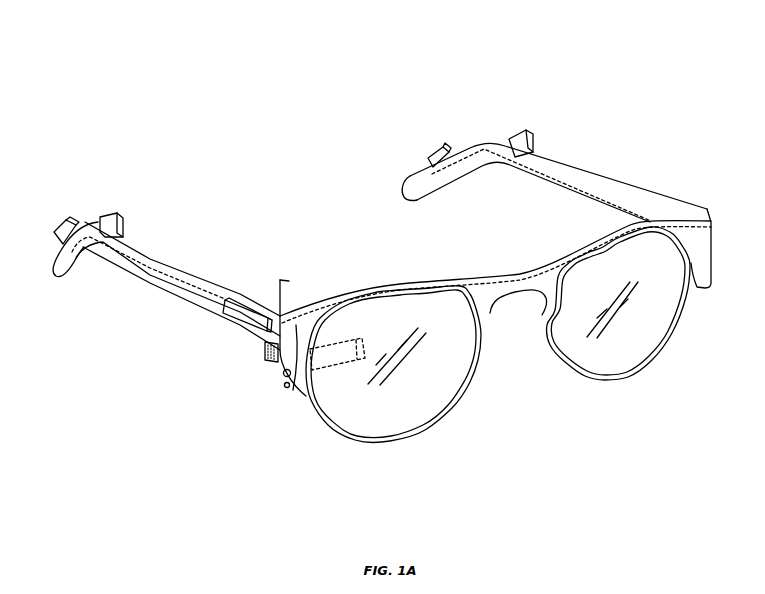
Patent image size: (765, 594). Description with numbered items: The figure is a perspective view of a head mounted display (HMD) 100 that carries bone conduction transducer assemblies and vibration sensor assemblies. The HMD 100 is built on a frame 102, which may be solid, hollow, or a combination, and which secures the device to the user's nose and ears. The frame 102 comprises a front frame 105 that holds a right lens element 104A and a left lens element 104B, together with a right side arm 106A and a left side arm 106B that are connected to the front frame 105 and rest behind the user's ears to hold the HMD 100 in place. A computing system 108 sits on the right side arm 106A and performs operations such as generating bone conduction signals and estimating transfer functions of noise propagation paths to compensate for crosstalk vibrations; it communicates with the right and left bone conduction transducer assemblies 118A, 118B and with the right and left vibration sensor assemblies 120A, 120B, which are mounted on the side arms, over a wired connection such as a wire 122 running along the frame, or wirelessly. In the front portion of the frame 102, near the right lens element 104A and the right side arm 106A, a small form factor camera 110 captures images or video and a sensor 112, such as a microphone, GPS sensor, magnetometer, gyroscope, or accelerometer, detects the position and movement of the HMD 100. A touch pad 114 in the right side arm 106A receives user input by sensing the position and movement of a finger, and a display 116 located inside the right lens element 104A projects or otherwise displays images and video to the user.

The head mounted display (HMD) 100 is at (292, 167).
The frame 102 is at (513, 279).
The right lens element 104A is at (417, 417).
The left lens element 104B is at (637, 353).
The front frame 105 is at (485, 340).
The right side arm 106A is at (152, 273).
The left side arm 106B is at (598, 178).
The computing system 108 is at (240, 312).
The camera 110 is at (275, 389).
The sensor 112 is at (287, 390).
The touch pad 114 is at (275, 363).
The display 116 is at (333, 347).
The right bone conduction transducer assembly 118A is at (110, 215).
The left bone conduction transducer assembly 118B is at (517, 130).
The right vibration sensor assembly 120A is at (55, 230).
The left vibration sensor assembly 120B is at (433, 145).
The wire 122 is at (685, 180).